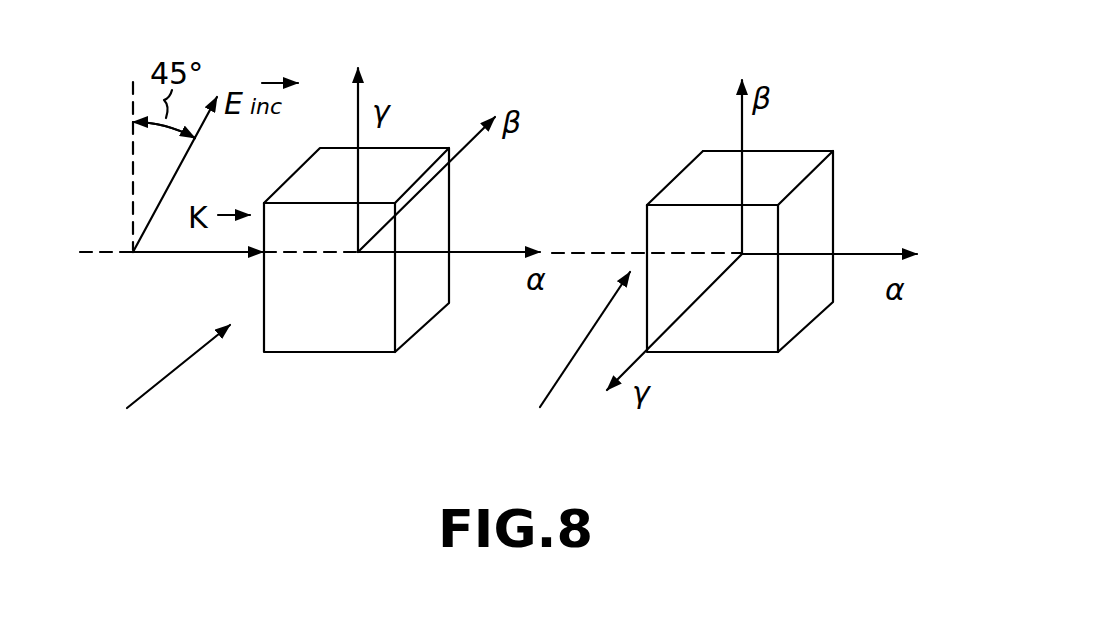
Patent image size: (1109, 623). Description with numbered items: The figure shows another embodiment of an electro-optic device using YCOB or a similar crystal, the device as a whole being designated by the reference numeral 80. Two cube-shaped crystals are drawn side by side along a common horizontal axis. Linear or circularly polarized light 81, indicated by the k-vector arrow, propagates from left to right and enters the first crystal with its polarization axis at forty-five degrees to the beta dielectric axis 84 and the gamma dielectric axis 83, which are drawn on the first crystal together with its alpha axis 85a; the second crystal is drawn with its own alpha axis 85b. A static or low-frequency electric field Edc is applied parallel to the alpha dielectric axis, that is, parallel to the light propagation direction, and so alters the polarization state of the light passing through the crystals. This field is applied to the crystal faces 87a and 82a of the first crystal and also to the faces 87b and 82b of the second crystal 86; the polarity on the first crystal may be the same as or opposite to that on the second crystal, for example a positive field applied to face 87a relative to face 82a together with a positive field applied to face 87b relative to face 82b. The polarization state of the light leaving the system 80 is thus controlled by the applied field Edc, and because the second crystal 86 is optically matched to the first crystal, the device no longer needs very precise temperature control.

The crystal 80 is at (855, 77).
The polarized light 81 is at (187, 257).
The crystal face 82a is at (430, 328).
The crystal face 82b is at (828, 318).
The gamma dielectric axis 83 is at (470, 7).
The beta dielectric axis 84 is at (463, 153).
The alpha axis of first crystal 85a is at (487, 254).
The alpha axis of second crystal 85b is at (866, 252).
The second crystal 86 is at (806, 151).
The crystal face 87a is at (167, 378).
The crystal face 87b is at (555, 390).